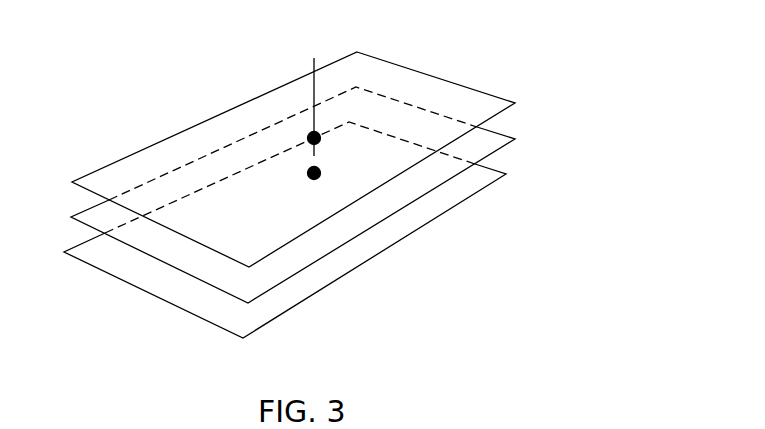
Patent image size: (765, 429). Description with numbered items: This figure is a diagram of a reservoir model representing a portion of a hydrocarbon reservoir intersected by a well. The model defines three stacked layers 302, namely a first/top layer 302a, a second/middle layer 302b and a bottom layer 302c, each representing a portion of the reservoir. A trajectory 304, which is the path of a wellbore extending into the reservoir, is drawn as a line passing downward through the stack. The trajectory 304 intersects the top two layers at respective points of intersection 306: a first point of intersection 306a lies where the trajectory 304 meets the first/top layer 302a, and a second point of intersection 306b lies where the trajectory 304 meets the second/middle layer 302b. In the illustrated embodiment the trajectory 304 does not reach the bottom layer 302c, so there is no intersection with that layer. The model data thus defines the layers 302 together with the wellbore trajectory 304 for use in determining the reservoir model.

The layers 302 is at (354, 195).
The first/top layer 302a is at (517, 101).
The second/middle layer 302b is at (517, 137).
The bottom layer 302c is at (517, 172).
The trajectory 304 is at (311, 70).
The points of intersection 306 is at (223, 134).
The first point of intersection 306a is at (306, 134).
The second point of intersection 306b is at (306, 170).